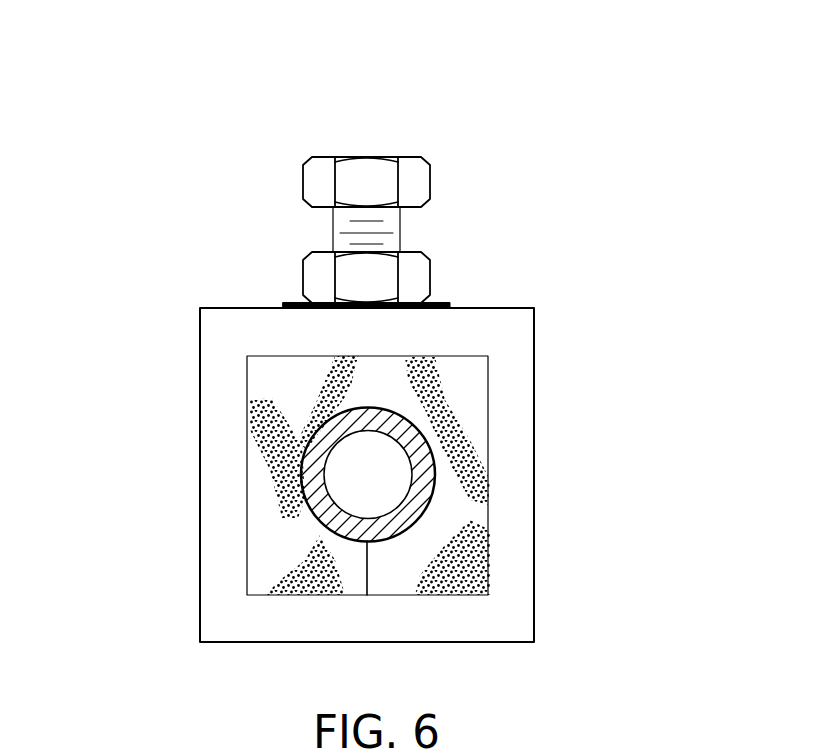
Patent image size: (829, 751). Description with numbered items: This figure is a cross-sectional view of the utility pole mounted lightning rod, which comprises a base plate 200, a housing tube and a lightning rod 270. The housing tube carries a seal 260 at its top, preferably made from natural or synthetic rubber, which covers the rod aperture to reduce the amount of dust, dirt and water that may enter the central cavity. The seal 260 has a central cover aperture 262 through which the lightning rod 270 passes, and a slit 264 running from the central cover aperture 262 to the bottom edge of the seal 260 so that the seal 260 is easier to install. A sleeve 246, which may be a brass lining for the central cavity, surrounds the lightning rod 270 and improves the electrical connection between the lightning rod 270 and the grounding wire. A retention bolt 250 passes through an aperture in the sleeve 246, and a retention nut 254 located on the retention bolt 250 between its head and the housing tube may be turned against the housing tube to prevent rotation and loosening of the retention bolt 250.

The base plate 200 is at (200, 383).
The retention bolt 250 is at (370, 173).
The retention nut 254 is at (425, 267).
The seal 260 is at (285, 542).
The central cover aperture 262 is at (303, 470).
The sleeve 246 is at (433, 457).
The lightning rod 270 is at (393, 485).
The slit 264 is at (365, 568).